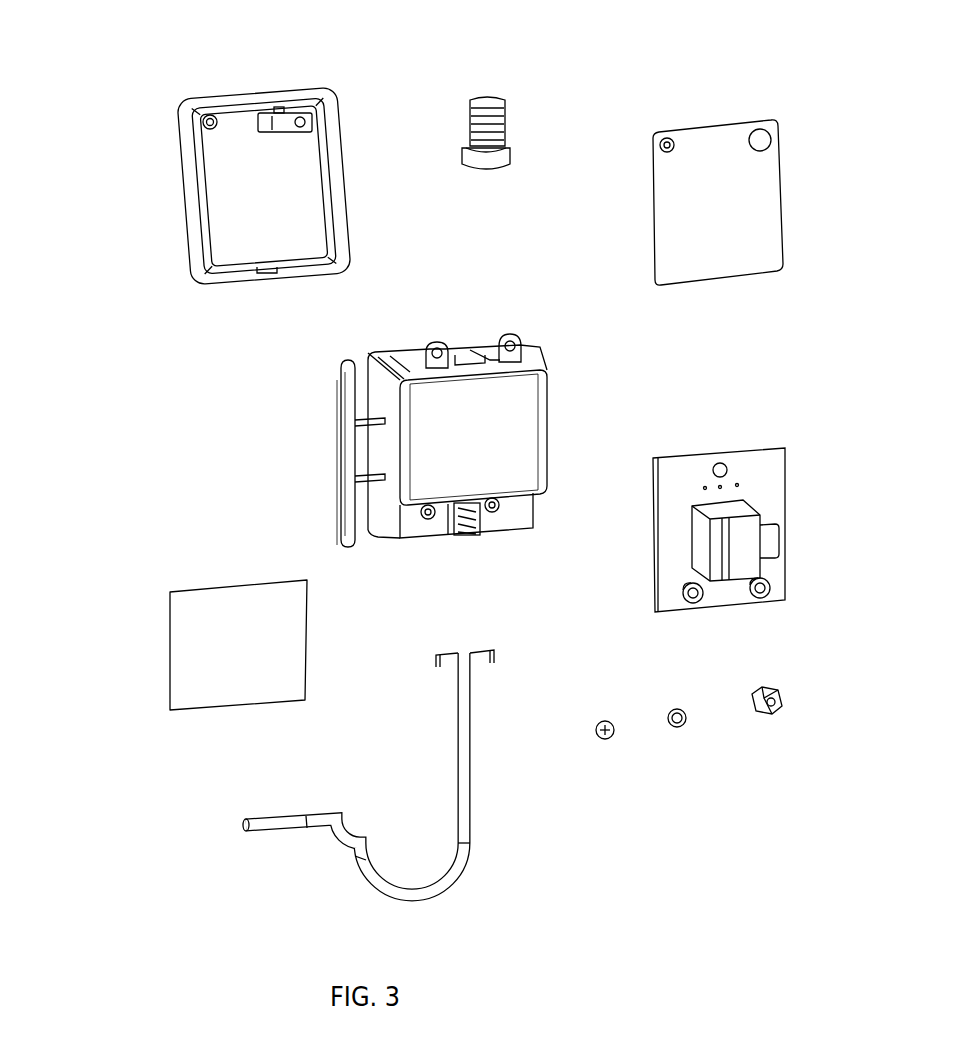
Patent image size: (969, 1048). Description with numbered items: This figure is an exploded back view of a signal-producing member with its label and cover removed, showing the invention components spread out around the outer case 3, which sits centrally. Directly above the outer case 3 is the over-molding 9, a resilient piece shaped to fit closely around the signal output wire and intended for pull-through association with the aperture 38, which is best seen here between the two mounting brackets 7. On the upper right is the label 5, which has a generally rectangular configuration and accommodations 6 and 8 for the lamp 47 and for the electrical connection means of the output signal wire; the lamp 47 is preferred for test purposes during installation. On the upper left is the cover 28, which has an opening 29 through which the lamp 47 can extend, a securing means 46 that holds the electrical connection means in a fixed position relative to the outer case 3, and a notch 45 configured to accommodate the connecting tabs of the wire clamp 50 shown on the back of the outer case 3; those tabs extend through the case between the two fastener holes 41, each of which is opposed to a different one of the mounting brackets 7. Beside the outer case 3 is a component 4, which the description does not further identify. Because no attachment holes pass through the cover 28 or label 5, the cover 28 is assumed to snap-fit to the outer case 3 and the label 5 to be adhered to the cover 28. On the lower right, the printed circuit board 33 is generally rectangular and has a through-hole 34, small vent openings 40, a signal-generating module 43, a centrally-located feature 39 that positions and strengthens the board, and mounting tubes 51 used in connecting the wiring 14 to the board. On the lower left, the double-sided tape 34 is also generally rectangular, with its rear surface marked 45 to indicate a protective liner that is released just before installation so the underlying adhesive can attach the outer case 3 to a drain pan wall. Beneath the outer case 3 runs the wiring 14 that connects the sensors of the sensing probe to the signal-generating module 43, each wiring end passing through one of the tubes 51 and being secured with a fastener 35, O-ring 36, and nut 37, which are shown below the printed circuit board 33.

The outer case 3 is at (543, 418).
The mounting clip 4 is at (338, 451).
The label 5 is at (730, 257).
The accommodation 6 is at (770, 132).
The mounting bracket 7 is at (523, 362).
The accommodation 8 is at (668, 130).
The over-molding 9 is at (502, 126).
The wiring 14 is at (458, 873).
The front cover 28 is at (218, 201).
The opening 29 is at (204, 118).
The printed circuit board 33 is at (665, 596).
The double-sided tape 34 is at (720, 465).
The fastener 35 is at (609, 745).
The O-ring 36 is at (685, 738).
The nut 37 is at (782, 720).
The aperture 38 is at (475, 368).
The centrally-located feature 39 is at (750, 520).
The small vent opening 40 is at (745, 478).
The fastener hole 41 is at (433, 517).
The signal-generating module 43 is at (780, 540).
The notch 45 is at (268, 278).
The securing means 46 is at (283, 122).
The lamp 47 is at (650, 468).
The wire clamp 50 is at (470, 548).
The mounting tube 51 is at (700, 598).